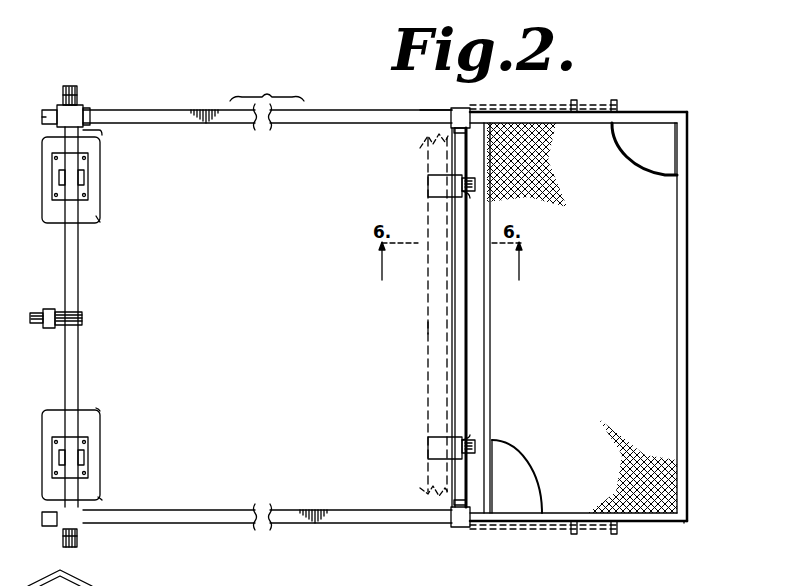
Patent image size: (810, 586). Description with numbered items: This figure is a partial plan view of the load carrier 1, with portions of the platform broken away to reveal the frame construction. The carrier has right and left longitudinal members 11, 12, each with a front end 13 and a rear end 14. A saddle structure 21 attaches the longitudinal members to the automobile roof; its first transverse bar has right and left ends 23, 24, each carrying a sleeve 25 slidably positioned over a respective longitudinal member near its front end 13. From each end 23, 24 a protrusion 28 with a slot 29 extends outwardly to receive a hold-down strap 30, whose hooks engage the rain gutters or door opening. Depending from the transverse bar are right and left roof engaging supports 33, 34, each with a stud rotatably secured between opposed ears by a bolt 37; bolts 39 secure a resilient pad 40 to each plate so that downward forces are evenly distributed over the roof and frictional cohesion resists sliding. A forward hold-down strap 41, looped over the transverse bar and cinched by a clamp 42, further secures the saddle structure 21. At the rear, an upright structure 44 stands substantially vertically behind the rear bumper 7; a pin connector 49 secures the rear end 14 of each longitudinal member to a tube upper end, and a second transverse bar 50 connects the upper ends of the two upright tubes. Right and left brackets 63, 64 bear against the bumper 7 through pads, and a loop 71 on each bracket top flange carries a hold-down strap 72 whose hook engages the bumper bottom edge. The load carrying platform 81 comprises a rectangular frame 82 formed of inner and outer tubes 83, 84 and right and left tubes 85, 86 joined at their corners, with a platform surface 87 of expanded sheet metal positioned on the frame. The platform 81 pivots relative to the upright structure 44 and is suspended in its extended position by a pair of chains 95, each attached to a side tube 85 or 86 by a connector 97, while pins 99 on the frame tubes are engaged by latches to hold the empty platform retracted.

The load carrier 1 is at (330, 98).
The rear bumper 7 is at (428, 328).
The right longitudinal member 11 is at (230, 126).
The left longitudinal member 12 is at (219, 506).
The front end 13 is at (44, 110).
The rear end 14 is at (420, 109).
The saddle structure 21 is at (94, 103).
The right end of first transverse bar 23 is at (100, 130).
The left end of first transverse bar 24 is at (102, 500).
The sleeve 25 is at (42, 122).
The protrusion 28 is at (63, 91).
The slot 29 is at (78, 95).
The hold-down strap 30 is at (70, 86).
The right roof engaging support 33 is at (100, 219).
The left roof engaging support 34 is at (98, 409).
The bolt 37 is at (84, 178).
The bolts 39 is at (86, 159).
The pad 40 is at (42, 189).
The forward hold-down strap 41 is at (60, 312).
The clamp 42 is at (48, 328).
The upright structure 44 is at (454, 288).
The pin connector 49 is at (464, 105).
The second transverse bar 50 is at (468, 311).
The right bracket 63 is at (428, 189).
The left bracket 64 is at (428, 448).
The loop 71 is at (470, 197).
The hold-down strap 72 is at (486, 188).
The load carrying platform 81 is at (684, 111).
The rectangular frame 82 is at (683, 522).
The inner tube 83 is at (495, 497).
The outer tube 84 is at (674, 148).
The right tube 85 is at (650, 95).
The left tube 86 is at (646, 523).
The platform surface 87 is at (580, 320).
The chains 95 is at (497, 106).
The connector 97 is at (574, 100).
The pins 99 is at (613, 100).